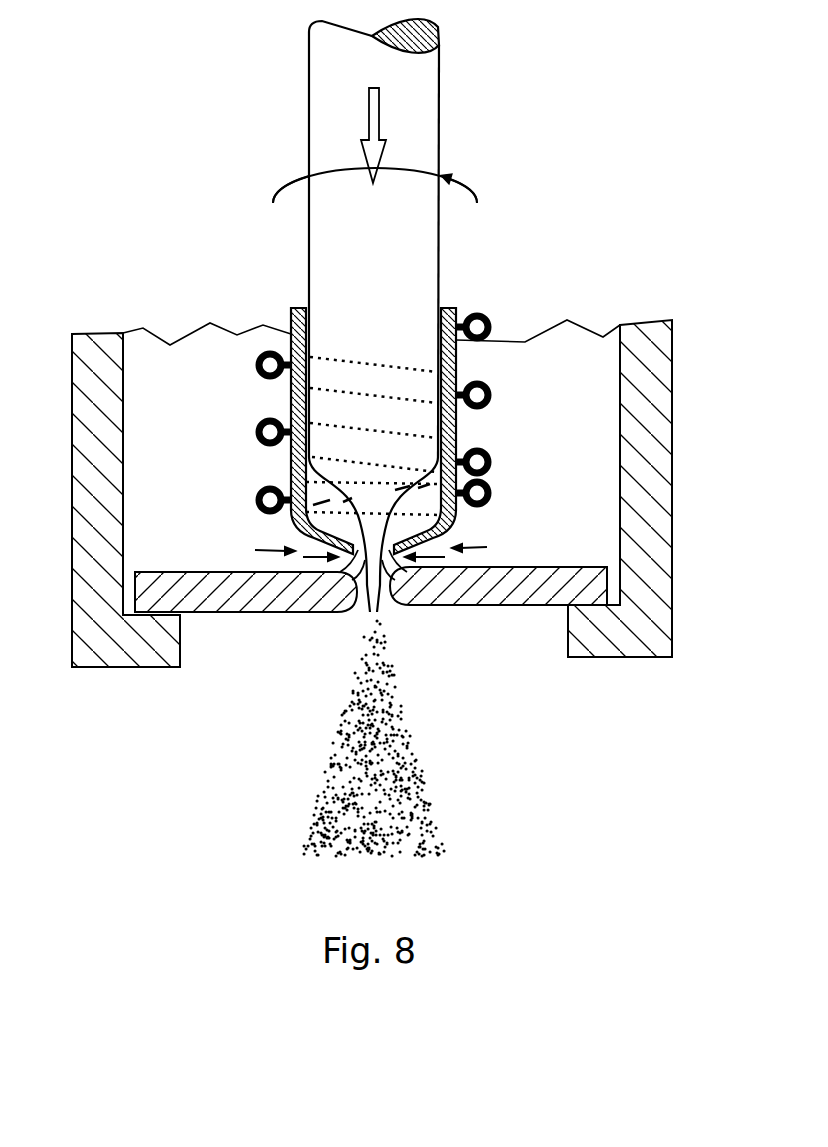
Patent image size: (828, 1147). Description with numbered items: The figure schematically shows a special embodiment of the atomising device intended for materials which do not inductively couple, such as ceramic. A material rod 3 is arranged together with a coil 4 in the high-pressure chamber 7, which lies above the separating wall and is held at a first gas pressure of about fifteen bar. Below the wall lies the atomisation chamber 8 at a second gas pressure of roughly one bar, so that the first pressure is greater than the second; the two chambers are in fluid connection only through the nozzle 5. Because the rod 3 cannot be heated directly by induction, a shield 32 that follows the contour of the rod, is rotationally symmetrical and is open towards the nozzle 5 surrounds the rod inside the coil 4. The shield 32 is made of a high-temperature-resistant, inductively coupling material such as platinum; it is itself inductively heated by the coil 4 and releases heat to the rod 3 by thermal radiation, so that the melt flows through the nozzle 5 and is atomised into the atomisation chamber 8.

The material rod 3 is at (440, 288).
The coil 4 is at (493, 332).
The nozzle 5 is at (355, 615).
The high-pressure chamber 7 is at (196, 429).
The atomisation chamber 8 is at (650, 742).
The shield 32 is at (427, 542).